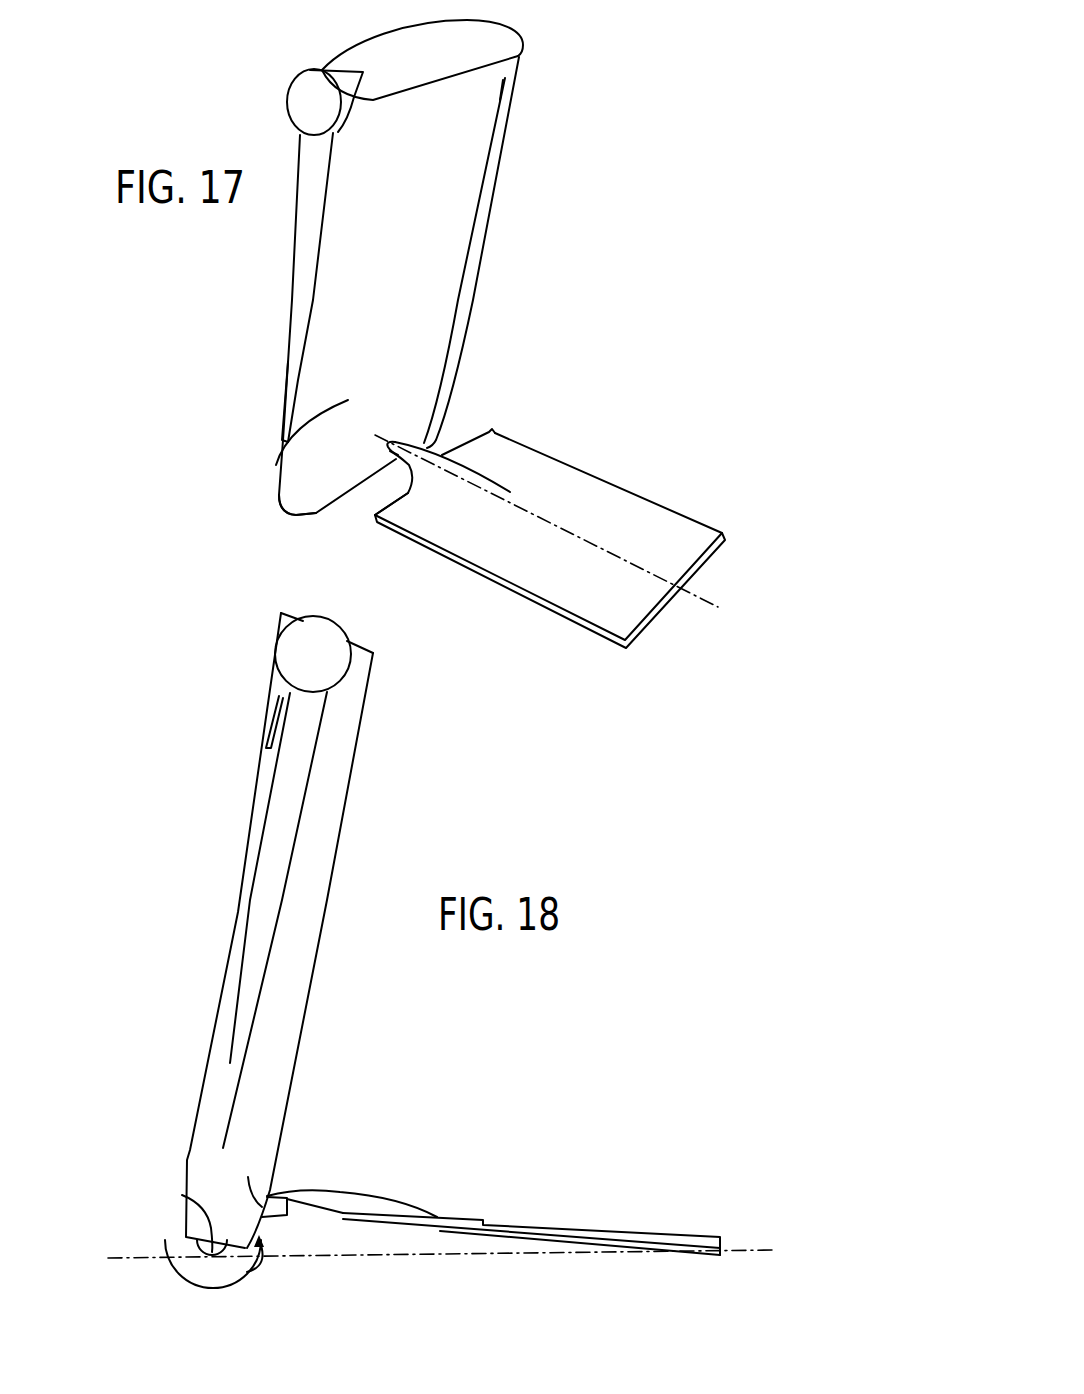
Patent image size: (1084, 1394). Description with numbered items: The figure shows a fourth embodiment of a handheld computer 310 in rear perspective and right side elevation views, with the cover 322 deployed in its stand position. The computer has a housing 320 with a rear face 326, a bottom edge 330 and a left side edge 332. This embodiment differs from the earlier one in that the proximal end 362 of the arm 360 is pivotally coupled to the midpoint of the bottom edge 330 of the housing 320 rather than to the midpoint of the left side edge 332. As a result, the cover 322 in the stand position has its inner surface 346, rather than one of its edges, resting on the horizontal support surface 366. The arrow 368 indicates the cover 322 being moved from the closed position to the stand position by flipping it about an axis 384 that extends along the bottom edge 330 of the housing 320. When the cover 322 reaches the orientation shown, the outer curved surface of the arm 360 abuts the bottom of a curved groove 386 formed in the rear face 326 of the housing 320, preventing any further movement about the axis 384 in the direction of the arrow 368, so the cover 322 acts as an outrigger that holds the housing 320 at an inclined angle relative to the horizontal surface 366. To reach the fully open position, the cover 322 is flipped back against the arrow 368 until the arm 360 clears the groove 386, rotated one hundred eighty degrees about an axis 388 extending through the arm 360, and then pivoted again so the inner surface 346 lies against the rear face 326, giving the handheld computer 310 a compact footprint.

In FIG. 17, the handheld computer 310 is at (555, 148).
In FIG. 18, the handheld computer 310 is at (416, 807).
In FIG. 17, the housing 320 is at (497, 178).
In FIG. 18, the housing 320 is at (339, 858).
In FIG. 17, the cover 322 is at (587, 627).
In FIG. 18, the cover 322 is at (565, 1228).
In FIG. 17, the rear face 326 is at (513, 103).
In FIG. 18, the rear face 326 is at (321, 951).
In FIG. 17, the bottom edge 330 is at (332, 509).
In FIG. 18, the bottom edge 330 is at (185, 1262).
In FIG. 17, the left side edge 332 is at (480, 256).
In FIG. 18, the inner surface 346 is at (582, 1243).
In FIG. 17, the arm 360 is at (494, 436).
In FIG. 18, the arm 360 is at (292, 1193).
In FIG. 17, the proximal end 362 is at (413, 442).
In FIG. 18, the proximal end 362 is at (250, 1269).
In FIG. 18, the horizontal support surface 366 is at (754, 1250).
In FIG. 18, the arrow 368 is at (207, 1285).
In FIG. 18, the axis 384 is at (182, 1200).
In FIG. 17, the curved groove 386 is at (278, 461).
In FIG. 18, the curved groove 386 is at (248, 1177).
In FIG. 17, the axis 388 is at (707, 595).